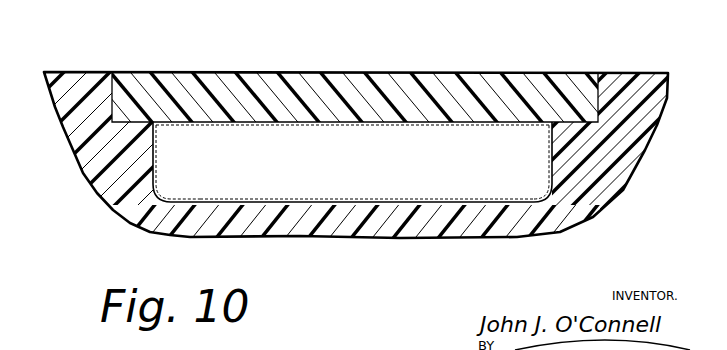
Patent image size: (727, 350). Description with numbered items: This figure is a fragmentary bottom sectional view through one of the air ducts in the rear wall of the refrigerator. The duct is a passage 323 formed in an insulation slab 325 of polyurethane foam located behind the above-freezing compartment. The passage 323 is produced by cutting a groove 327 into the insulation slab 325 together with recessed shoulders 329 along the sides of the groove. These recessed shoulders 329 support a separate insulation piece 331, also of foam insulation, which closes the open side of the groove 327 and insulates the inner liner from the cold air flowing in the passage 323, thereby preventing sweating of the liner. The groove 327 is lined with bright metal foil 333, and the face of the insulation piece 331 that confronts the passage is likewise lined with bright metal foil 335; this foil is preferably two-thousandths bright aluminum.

The passage 323 is at (352, 162).
The insulation slab 325 is at (516, 212).
The groove 327 is at (388, 203).
The recessed shoulders 329 is at (96, 144).
The insulation piece 331 is at (408, 82).
The bright metal foil 333 is at (211, 201).
The bright metal foil 335 is at (400, 125).